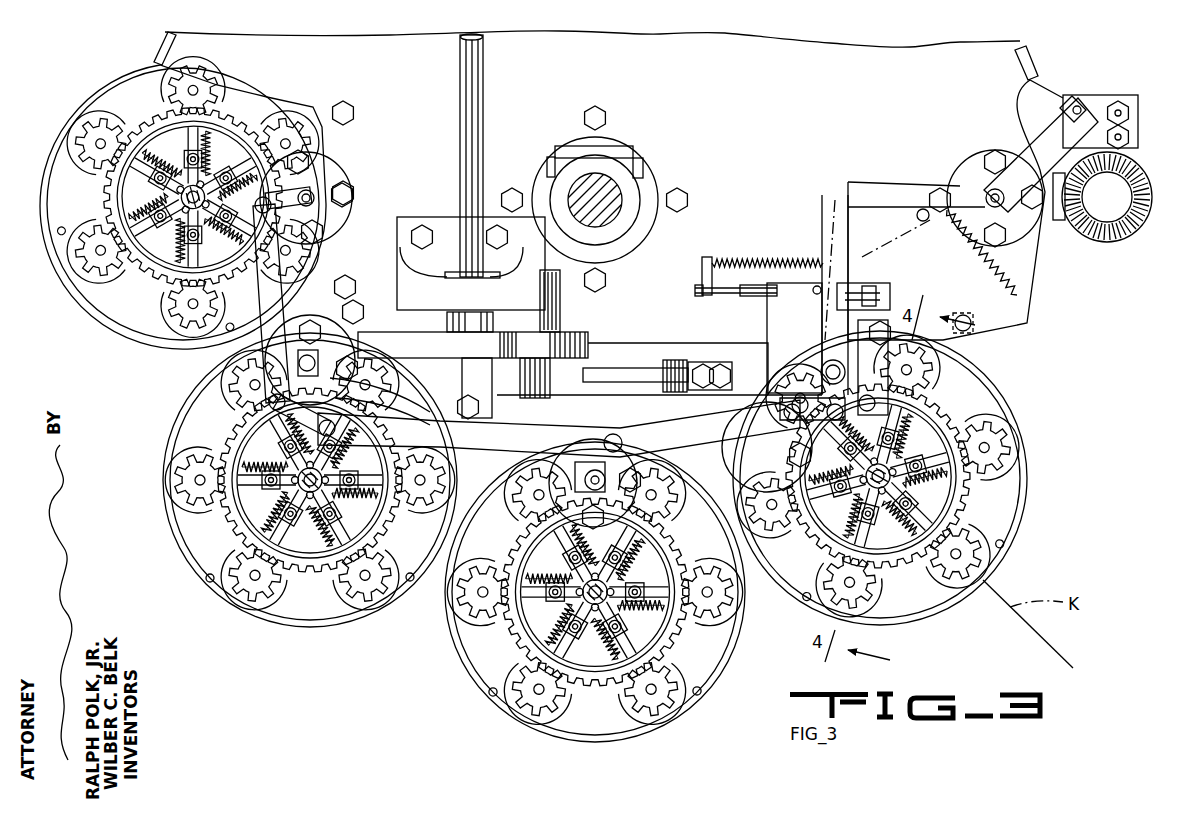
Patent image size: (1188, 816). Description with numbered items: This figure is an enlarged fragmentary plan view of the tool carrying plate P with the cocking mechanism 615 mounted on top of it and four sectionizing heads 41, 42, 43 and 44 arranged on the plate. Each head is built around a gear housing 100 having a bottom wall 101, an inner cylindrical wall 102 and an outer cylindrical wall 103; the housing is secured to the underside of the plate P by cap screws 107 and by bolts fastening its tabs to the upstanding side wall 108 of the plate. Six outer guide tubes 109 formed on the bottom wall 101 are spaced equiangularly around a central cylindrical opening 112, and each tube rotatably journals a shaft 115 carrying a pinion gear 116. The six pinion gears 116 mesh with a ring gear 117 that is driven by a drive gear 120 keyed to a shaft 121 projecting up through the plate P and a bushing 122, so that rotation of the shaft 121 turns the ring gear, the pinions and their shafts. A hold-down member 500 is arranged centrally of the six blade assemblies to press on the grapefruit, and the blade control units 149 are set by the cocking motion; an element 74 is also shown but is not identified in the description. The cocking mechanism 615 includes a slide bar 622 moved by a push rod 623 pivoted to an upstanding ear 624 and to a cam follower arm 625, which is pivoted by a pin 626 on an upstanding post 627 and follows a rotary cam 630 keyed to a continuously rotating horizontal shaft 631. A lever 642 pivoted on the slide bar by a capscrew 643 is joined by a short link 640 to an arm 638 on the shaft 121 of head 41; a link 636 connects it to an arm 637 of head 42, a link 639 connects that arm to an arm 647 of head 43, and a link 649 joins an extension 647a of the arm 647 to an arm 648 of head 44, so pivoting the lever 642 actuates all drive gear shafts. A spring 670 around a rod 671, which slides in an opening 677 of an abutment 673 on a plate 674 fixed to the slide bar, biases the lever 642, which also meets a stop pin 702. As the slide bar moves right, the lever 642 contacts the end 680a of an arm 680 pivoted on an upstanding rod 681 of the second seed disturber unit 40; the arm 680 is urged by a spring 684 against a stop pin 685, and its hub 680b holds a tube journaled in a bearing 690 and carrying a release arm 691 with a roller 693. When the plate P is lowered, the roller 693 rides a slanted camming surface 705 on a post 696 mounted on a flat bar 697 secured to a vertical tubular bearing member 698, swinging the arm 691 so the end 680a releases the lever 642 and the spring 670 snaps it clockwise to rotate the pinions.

The head 44 is at (137, 342).
The head 43 is at (268, 640).
The head 42 is at (663, 730).
The first head 41 is at (1012, 392).
The shaft 115 is at (185, 86).
The pinion gear 116 is at (185, 95).
The ring gear 117 is at (100, 205).
The outer guide tube 109 is at (975, 365).
The central cylindrical opening 112 is at (887, 560).
The blade control unit 149 is at (970, 502).
The hold-down member 500 is at (924, 445).
The gear housing 100 is at (1010, 390).
The bottom wall 101 is at (970, 367).
The inner cylindrical wall 102 is at (1017, 493).
The outer cylindrical wall 103 is at (1027, 458).
The drive gear 120 is at (330, 160).
The shaft 121 is at (310, 190).
The bushing 122 is at (710, 445).
The arm 648 is at (292, 232).
The link 649 is at (285, 290).
The arm 647 is at (335, 428).
The extension 647a is at (383, 393).
The link 639 is at (480, 441).
The arm 637 is at (597, 470).
The shaft 631 is at (472, 90).
The upstanding post 627 is at (500, 303).
The rotary cam 630 is at (465, 355).
The pin 626 is at (545, 400).
The push rod 623 is at (600, 395).
The link 636 is at (660, 430).
The hub 74 is at (610, 202).
The slide bar 622 is at (650, 360).
The cam follower arm 625 is at (590, 368).
The upstanding ear 624 is at (720, 365).
The spring 670 is at (765, 262).
The rod 671 is at (702, 265).
The abutment 673 is at (702, 282).
The opening 677 is at (705, 258).
The plate 674 is at (775, 292).
The cocking mechanism 615 is at (785, 250).
The capscrew 643 is at (832, 355).
The stop pin 702 is at (815, 294).
The short link 640 is at (821, 370).
The arm 638 is at (770, 400).
The arm 680 is at (880, 190).
The end 680a is at (848, 185).
The hub 680b is at (995, 180).
The stop pin 685 is at (920, 218).
The lever 642 is at (862, 257).
The bearing 690 is at (930, 182).
The second seed disturber unit 40 is at (985, 190).
The release arm 691 is at (1050, 133).
The roller 693 is at (1068, 100).
The slanted camming surface 705 is at (1080, 98).
The post 696 is at (1095, 100).
The flat bar 697 is at (1110, 107).
The vertical tubular bearing member 698 is at (1130, 157).
The spring 684 is at (980, 258).
The upstanding rod 681 is at (970, 243).
The cap screw 107 is at (960, 316).
The upstanding side wall 108 is at (1037, 287).
The tool carrying plate P is at (1020, 48).